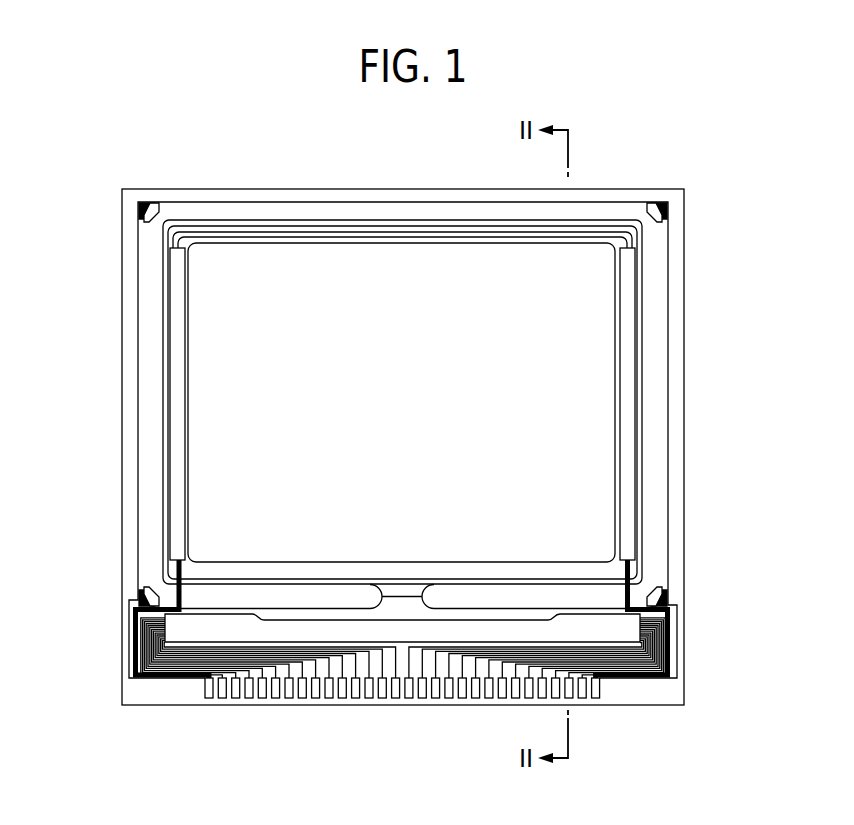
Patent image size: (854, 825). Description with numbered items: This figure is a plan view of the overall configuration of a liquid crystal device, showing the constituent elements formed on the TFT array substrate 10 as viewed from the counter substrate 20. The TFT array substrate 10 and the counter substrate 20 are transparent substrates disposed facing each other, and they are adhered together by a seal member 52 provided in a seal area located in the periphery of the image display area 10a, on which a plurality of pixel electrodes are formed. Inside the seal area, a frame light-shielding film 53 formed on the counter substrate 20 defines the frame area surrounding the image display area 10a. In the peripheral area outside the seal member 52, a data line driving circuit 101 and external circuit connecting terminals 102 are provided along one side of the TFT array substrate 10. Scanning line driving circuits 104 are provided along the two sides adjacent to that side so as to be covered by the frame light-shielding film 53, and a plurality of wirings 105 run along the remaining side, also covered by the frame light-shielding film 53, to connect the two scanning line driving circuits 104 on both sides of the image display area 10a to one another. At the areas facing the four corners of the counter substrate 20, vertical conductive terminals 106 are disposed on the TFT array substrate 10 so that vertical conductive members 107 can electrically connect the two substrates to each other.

The TFT array substrate 10 is at (240, 197).
The image display area 10a is at (232, 358).
The counter substrate 20 is at (423, 200).
The seal member 52 is at (660, 337).
The frame light-shielding film 53 is at (628, 580).
The data line driving circuit 101 is at (187, 636).
The external circuit connecting terminals 102 is at (372, 690).
The scanning line driving circuits 104 is at (630, 405).
The wirings 105 is at (313, 230).
The vertical conductive terminals 106 is at (150, 200).
The vertical conductive members 107 is at (670, 612).